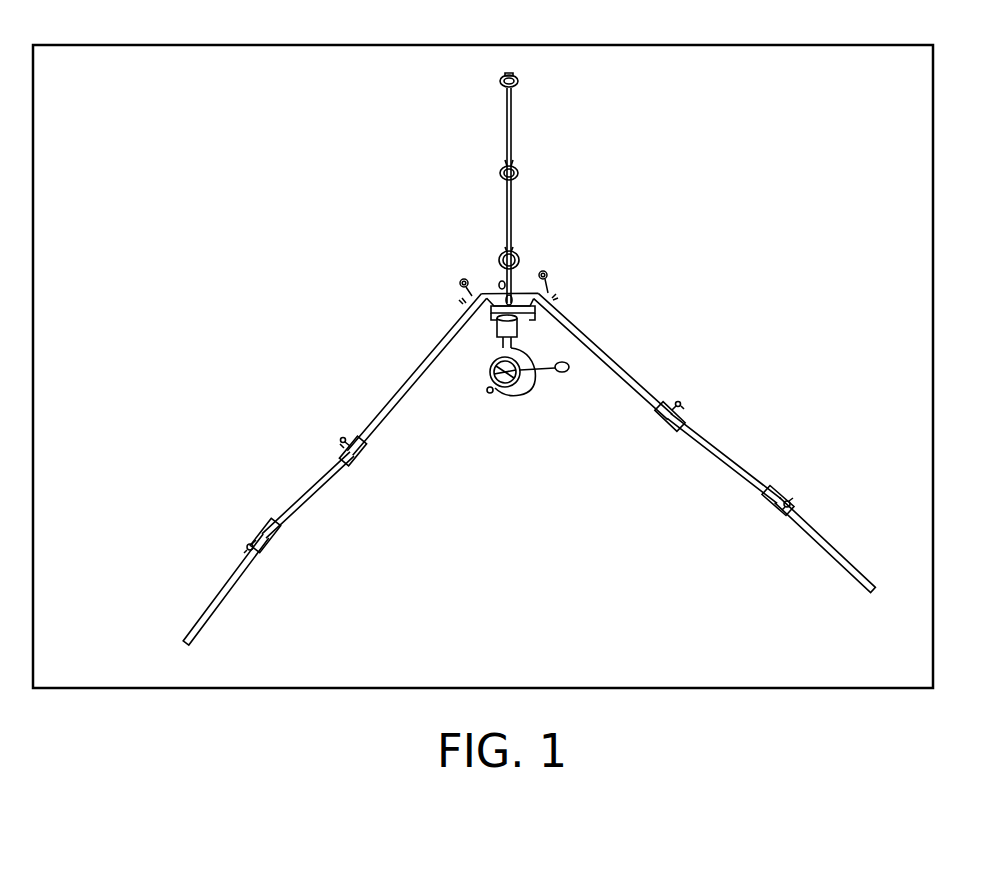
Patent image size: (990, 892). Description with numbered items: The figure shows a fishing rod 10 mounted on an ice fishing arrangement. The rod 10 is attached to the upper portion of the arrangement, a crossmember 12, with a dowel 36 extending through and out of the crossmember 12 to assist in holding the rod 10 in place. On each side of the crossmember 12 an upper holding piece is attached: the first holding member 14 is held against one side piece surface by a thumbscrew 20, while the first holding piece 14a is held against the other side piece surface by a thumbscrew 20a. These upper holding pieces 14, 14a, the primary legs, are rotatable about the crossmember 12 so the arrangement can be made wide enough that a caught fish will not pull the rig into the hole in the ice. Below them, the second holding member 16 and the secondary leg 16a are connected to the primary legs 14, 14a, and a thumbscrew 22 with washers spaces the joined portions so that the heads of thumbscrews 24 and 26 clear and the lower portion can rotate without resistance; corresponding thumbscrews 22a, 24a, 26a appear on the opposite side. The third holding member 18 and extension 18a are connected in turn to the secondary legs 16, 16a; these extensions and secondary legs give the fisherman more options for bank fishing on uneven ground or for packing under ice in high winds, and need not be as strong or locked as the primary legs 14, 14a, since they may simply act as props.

The fishing rod 10 is at (591, 207).
The crossmember 12 is at (520, 300).
The first holding member 14 is at (610, 368).
The first holding piece 14a is at (438, 348).
The second holding member 16 is at (720, 458).
The secondary leg 16a is at (318, 478).
The third holding member 18 is at (823, 545).
The extension 18a is at (213, 605).
The thumbscrew 20 is at (564, 300).
The thumbscrew 20a is at (466, 300).
The thumbscrew 22 is at (686, 412).
The left first joint 22a is at (345, 440).
The thumbscrew 24 is at (780, 500).
The left second joint 24a is at (258, 543).
The thumbscrew 26 is at (790, 503).
The left hook 26a is at (248, 548).
The dowel 36 is at (502, 283).